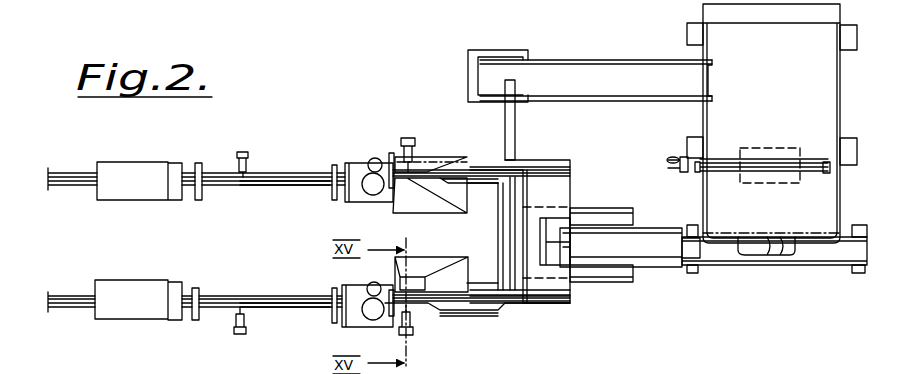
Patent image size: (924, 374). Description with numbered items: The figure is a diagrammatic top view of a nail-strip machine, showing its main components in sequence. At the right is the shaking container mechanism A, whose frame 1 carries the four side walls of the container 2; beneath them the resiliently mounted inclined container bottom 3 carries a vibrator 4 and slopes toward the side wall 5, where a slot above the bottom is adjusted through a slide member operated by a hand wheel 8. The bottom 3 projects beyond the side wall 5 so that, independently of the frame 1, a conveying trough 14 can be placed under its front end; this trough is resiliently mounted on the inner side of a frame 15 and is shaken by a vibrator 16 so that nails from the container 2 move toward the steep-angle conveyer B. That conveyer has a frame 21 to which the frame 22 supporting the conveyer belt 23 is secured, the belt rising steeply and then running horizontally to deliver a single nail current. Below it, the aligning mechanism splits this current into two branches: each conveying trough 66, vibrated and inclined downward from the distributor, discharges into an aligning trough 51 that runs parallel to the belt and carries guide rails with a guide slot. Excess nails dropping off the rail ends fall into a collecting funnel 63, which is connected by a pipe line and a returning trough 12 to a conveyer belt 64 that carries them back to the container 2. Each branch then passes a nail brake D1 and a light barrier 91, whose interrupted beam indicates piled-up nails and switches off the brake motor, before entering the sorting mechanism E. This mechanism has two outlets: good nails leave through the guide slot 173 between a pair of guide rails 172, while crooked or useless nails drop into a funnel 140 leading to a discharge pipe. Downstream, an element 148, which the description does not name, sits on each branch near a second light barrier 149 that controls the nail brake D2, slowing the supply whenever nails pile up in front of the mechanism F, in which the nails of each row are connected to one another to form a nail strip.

The frame 1 is at (858, 43).
The container 2 is at (834, 84).
The container bottom 3 is at (777, 85).
The vibrator 4 is at (758, 150).
The side wall 5 is at (818, 160).
The hand wheel 8 is at (672, 158).
The returning trough 12 is at (503, 130).
The conveying trough 14 is at (852, 253).
The frame 15 is at (863, 268).
The vibrator 16 is at (749, 256).
The frame 21 is at (608, 208).
The frame 22 is at (646, 224).
The conveyer belt 23 is at (660, 230).
The aligning trough 51 is at (498, 313).
The collecting funnel 63 is at (445, 155).
The conveyer belt 64 is at (602, 72).
The conveying trough 66 is at (547, 165).
The light barrier 91 is at (391, 152).
The funnel 140 is at (373, 199).
The collar 148 is at (334, 165).
The light barrier 149 is at (200, 163).
The guide rails 172 is at (294, 178).
The guide slot 173 is at (274, 184).
The shaking container mechanism A is at (850, 97).
The steep-angle conveyer B is at (659, 276).
The nail brake D1 is at (411, 137).
The nail brake D2 is at (250, 157).
The sorting mechanism E is at (374, 157).
The mechanism F is at (131, 162).